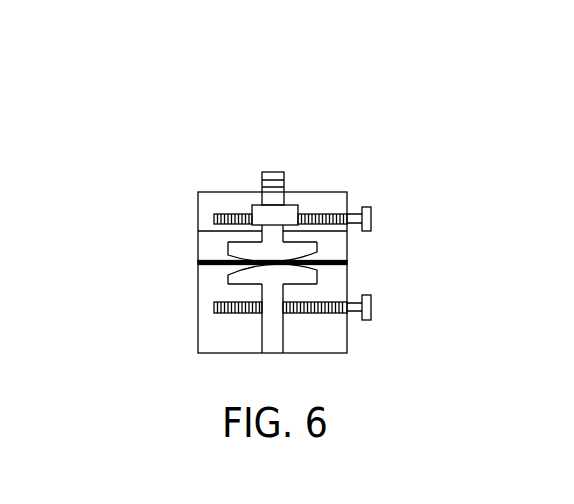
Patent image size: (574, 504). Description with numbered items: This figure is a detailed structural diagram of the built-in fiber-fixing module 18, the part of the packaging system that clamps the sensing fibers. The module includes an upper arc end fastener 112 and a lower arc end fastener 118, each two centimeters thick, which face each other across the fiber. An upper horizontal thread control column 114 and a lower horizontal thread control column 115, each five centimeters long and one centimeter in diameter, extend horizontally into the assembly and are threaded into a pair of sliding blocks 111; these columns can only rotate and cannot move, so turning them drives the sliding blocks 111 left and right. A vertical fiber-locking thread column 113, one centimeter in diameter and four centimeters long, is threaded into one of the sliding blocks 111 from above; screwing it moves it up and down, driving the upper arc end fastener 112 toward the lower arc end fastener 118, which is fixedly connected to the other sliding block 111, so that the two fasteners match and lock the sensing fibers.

The built-in fiber-fixing module 18 is at (122, 53).
The sliding blocks 111 is at (271, 215).
The upper arc end fastener 112 is at (232, 241).
The fiber-locking thread column 113 is at (273, 172).
The upper horizontal thread control column 114 is at (372, 206).
The lower horizontal thread control column 115 is at (372, 308).
The lower arc end fastener 118 is at (272, 273).